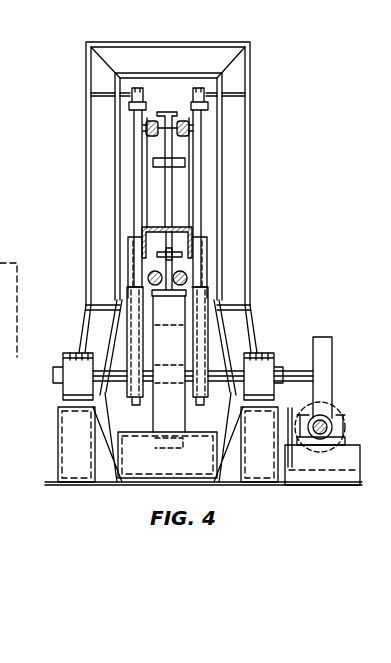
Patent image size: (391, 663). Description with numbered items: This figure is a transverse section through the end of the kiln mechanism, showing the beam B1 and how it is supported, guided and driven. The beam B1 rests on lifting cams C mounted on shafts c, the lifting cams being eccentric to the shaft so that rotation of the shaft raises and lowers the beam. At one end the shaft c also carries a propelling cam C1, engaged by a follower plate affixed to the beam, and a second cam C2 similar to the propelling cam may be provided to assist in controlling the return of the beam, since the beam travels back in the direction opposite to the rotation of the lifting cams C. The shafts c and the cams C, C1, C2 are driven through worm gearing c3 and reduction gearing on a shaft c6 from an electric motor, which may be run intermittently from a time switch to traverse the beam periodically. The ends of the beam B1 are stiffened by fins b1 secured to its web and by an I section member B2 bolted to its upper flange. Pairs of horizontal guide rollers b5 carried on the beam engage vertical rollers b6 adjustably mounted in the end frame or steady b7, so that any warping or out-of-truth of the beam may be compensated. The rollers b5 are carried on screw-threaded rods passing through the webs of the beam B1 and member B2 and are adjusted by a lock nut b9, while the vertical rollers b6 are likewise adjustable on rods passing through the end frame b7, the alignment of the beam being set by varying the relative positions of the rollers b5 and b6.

The end frame b7 is at (237, 75).
The lock nut b9 is at (188, 90).
The vertical roller b6 is at (135, 147).
The I section member B2 is at (172, 180).
The horizontal guide roller b5 is at (145, 128).
The fin b1 is at (182, 253).
The beam B1 is at (190, 265).
The propelling cam C1 is at (137, 358).
The second cam C2 is at (202, 358).
The lifting cam C is at (173, 428).
The shaft c is at (302, 372).
The worm gearing c3 is at (325, 394).
The shaft c6 is at (326, 427).